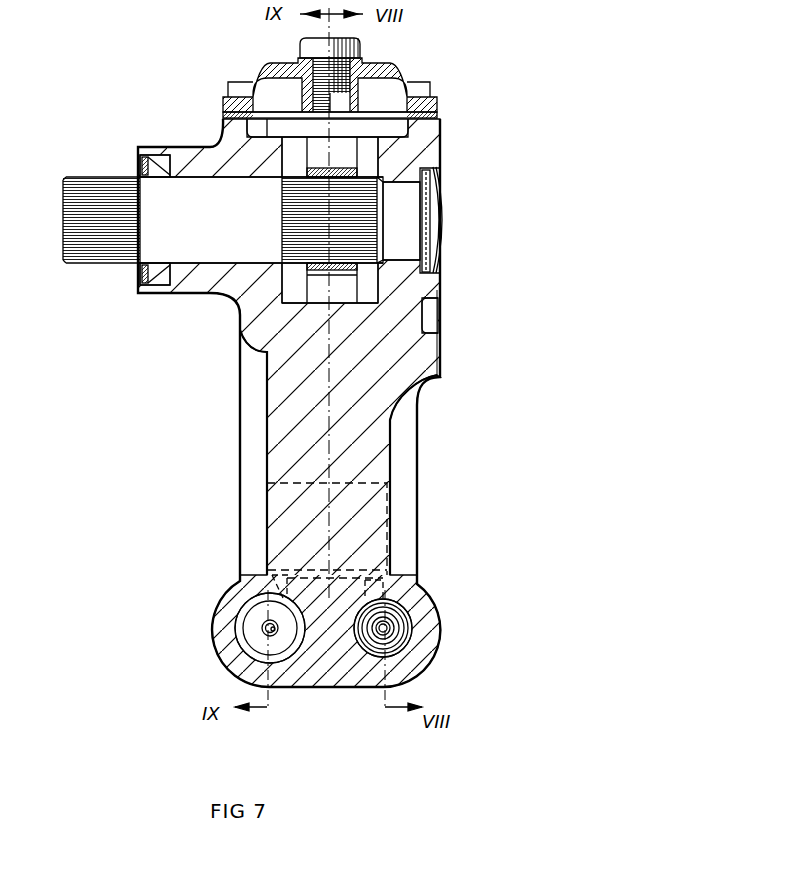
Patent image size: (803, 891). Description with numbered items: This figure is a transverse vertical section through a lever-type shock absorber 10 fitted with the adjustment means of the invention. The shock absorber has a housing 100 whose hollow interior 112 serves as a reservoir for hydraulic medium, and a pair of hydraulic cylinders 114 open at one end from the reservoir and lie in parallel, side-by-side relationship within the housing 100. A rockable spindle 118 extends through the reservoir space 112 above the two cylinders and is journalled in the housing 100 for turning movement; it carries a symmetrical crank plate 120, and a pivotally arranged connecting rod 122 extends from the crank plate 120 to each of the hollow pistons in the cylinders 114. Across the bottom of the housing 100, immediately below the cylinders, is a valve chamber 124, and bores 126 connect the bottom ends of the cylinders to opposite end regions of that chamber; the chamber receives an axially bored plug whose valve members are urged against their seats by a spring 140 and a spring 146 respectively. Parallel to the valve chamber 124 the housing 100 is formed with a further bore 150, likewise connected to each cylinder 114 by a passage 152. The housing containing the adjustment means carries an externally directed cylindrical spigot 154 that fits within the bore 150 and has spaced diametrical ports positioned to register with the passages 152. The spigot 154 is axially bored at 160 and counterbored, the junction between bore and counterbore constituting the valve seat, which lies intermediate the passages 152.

The steering gear assembly 10 is at (276, 631).
The housing 100 is at (237, 386).
The hollow interior 112 is at (373, 123).
The hydraulic cylinder 114 is at (360, 504).
The rockable spindle 118 is at (96, 202).
The crank plate 120 is at (293, 283).
The connecting rod 122 is at (343, 172).
The valve chamber 124 is at (413, 614).
The bore 126 is at (420, 578).
The spring 140 is at (408, 635).
The spring 146 is at (395, 645).
The further bore 150 is at (233, 623).
The passage 152 is at (250, 563).
The cylindrical spigot 154 is at (278, 652).
The axial bore 160 is at (262, 631).